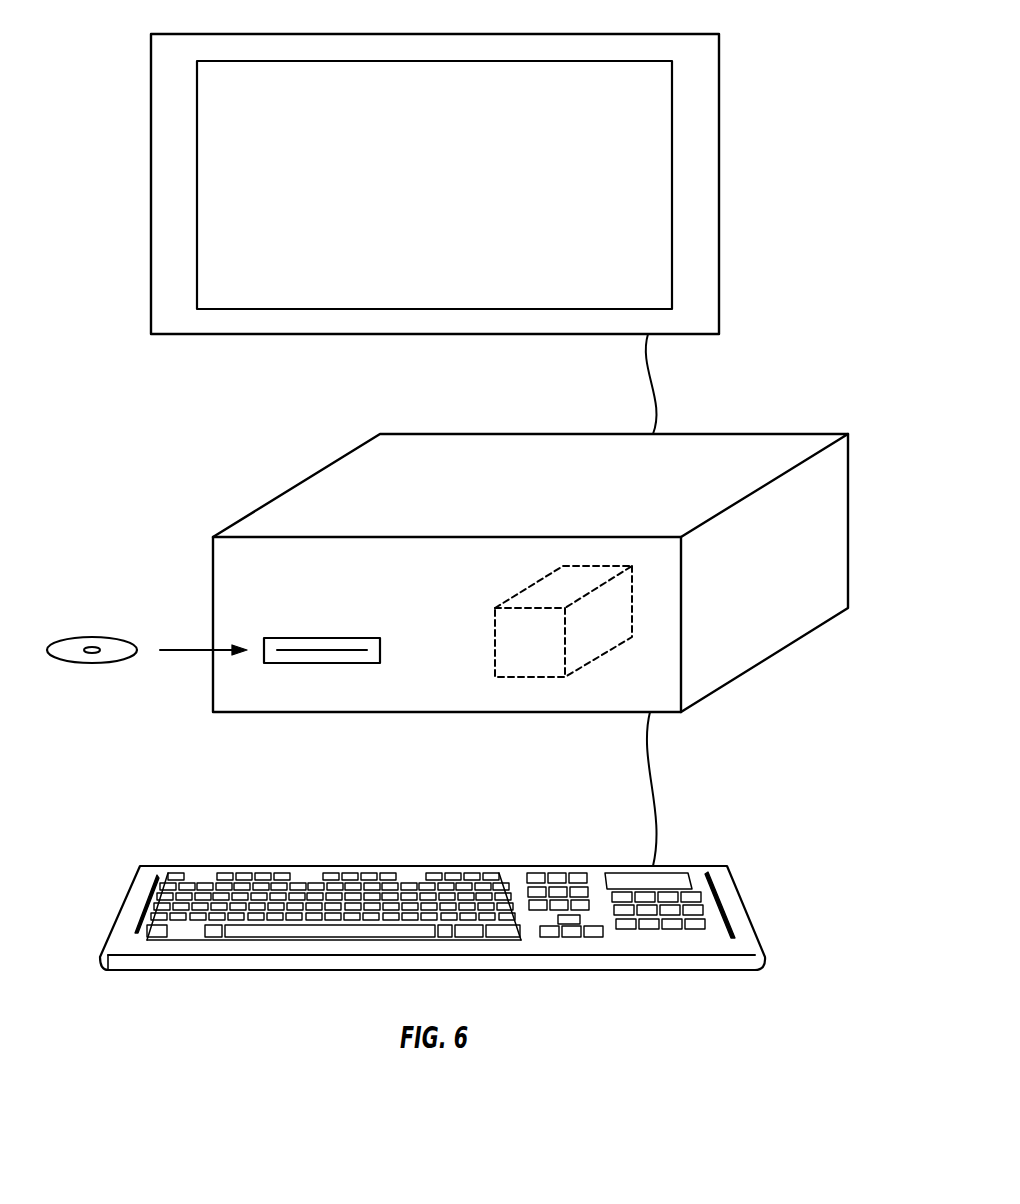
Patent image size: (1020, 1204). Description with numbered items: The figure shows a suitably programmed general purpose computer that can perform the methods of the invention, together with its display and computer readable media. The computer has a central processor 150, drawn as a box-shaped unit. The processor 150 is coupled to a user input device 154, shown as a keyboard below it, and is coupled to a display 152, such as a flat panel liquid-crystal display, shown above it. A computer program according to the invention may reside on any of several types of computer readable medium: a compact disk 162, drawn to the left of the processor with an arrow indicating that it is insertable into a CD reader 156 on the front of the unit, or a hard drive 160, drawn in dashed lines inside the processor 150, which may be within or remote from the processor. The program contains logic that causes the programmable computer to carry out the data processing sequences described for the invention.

The central processor 150 is at (776, 434).
The display 152 is at (657, 33).
The user input device 154 is at (700, 866).
The CD reader 156 is at (343, 637).
The hard drive 160 is at (495, 610).
The compact disk 162 is at (127, 638).